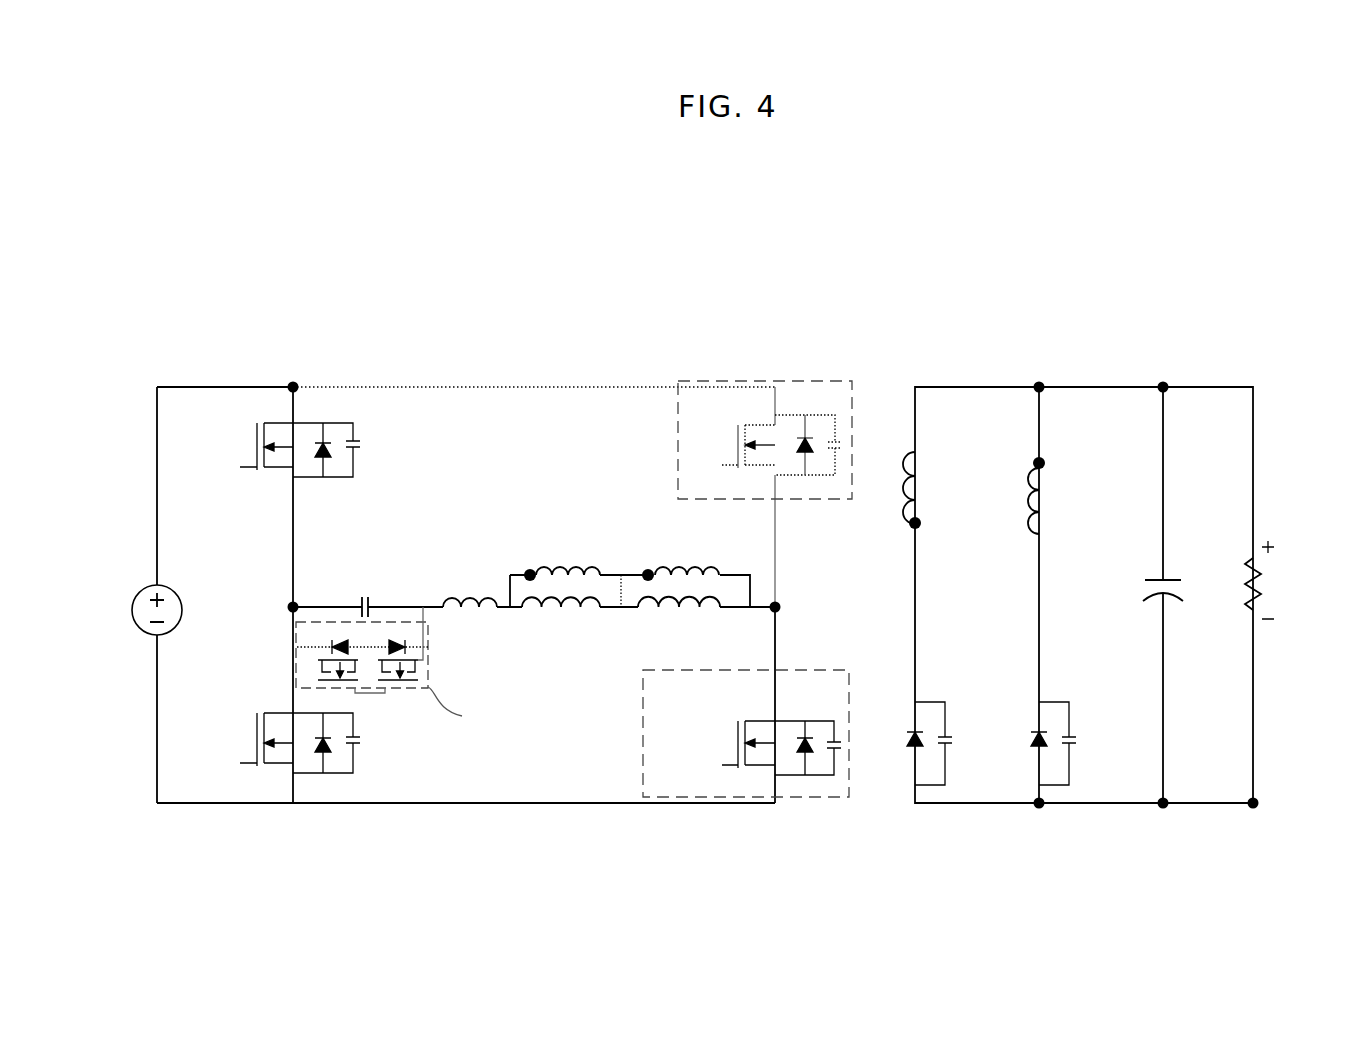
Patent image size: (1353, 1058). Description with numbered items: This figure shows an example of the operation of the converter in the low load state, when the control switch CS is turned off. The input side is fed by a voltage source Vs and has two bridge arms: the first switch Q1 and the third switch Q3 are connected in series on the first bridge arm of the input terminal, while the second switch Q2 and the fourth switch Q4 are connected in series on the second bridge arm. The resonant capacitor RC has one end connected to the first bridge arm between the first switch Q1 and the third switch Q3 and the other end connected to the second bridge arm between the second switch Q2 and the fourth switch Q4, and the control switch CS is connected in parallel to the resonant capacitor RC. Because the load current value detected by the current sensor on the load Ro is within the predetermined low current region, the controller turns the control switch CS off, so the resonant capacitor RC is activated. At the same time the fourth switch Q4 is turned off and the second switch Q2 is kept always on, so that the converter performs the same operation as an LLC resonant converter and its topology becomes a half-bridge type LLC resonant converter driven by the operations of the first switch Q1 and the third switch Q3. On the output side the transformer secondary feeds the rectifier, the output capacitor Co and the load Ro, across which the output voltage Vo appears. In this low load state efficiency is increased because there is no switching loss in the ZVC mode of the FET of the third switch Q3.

The first switch Q1 is at (284, 450).
The second switch Q2 is at (737, 761).
The third switch Q3 is at (284, 743).
The fourth switch Q4 is at (765, 425).
The resonant capacitor RC is at (349, 598).
The control switch CS is at (436, 685).
The input voltage source Vs is at (142, 610).
The output capacitor Co is at (1155, 581).
The load Ro is at (1240, 576).
The output voltage Vo is at (1279, 580).